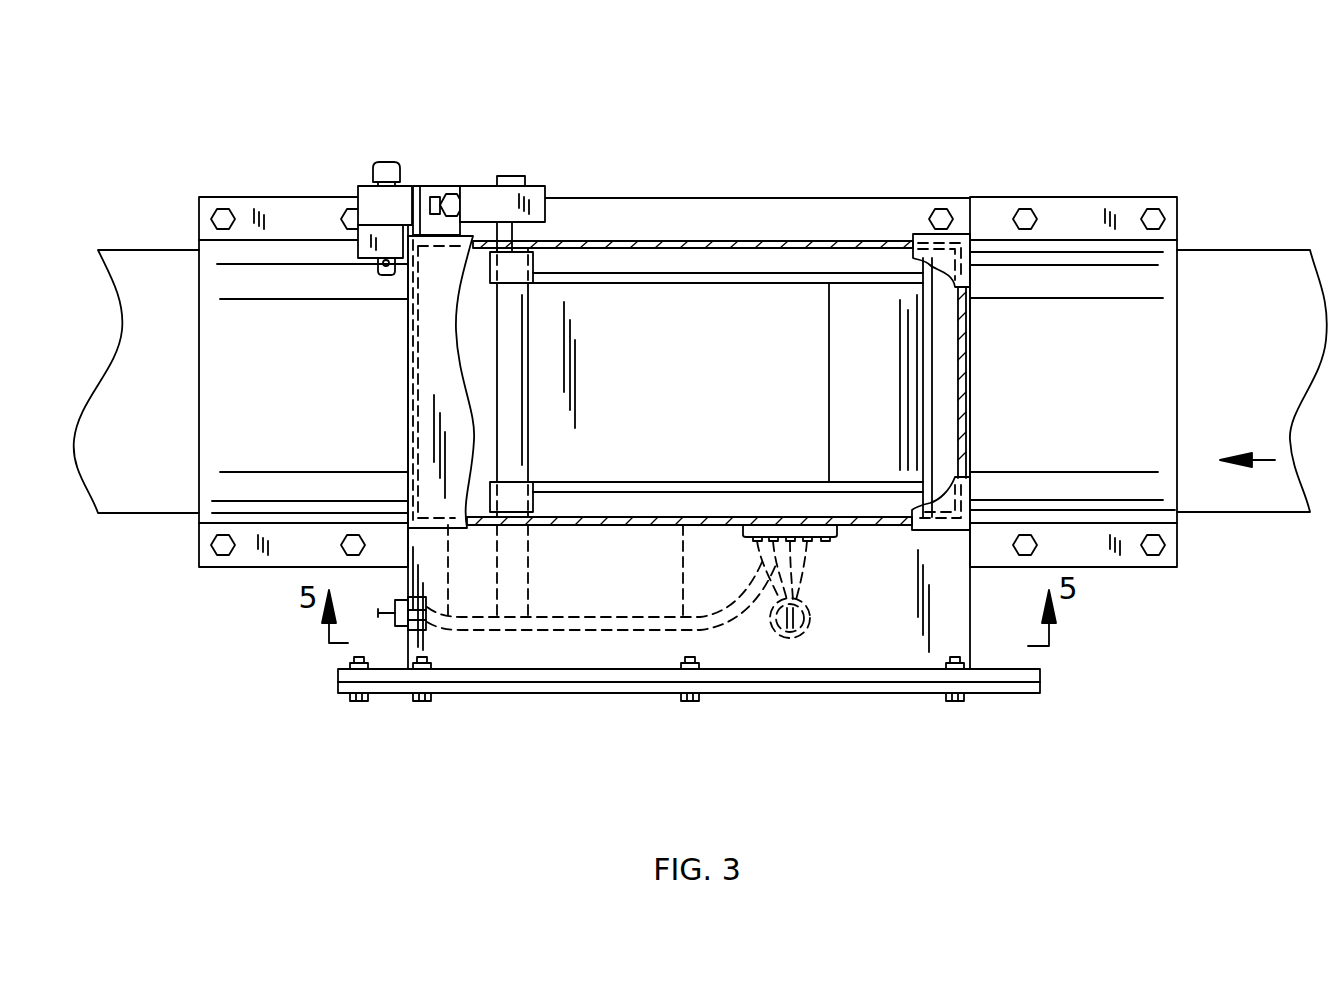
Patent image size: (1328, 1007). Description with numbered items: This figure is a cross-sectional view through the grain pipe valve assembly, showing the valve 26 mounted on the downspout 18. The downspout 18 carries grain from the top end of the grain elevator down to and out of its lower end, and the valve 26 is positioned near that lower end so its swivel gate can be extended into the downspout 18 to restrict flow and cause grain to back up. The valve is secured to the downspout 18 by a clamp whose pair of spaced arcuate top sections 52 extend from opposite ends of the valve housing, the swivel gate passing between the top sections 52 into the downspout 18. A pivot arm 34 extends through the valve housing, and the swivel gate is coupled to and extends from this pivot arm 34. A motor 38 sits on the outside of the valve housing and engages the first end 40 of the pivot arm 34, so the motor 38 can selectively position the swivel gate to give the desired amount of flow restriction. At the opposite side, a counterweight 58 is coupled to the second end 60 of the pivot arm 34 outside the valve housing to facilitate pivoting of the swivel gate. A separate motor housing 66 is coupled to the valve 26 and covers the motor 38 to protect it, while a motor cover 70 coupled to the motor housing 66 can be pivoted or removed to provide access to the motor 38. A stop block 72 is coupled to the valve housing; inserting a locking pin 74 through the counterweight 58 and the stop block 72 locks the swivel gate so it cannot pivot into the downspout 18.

The downspout 18 is at (132, 500).
The valve 26 is at (768, 320).
The pivot arm 34 is at (518, 233).
The motor 38 is at (573, 597).
The first end 40 is at (518, 607).
The top sections 52 is at (1075, 265).
The counterweight 58 is at (427, 190).
The second end 60 is at (512, 180).
The motor housing 66 is at (887, 647).
The motor cover 70 is at (820, 693).
The stop block 72 is at (365, 242).
The locking pin 74 is at (385, 164).